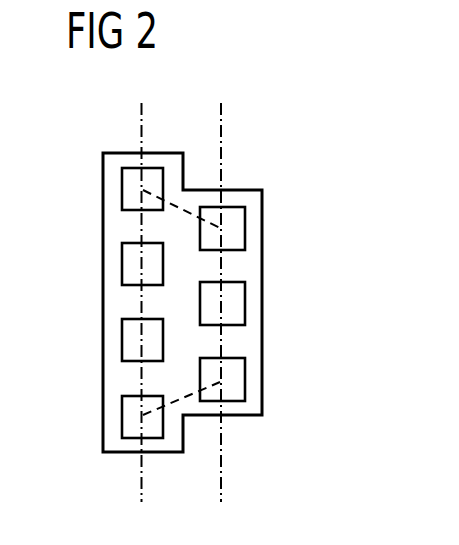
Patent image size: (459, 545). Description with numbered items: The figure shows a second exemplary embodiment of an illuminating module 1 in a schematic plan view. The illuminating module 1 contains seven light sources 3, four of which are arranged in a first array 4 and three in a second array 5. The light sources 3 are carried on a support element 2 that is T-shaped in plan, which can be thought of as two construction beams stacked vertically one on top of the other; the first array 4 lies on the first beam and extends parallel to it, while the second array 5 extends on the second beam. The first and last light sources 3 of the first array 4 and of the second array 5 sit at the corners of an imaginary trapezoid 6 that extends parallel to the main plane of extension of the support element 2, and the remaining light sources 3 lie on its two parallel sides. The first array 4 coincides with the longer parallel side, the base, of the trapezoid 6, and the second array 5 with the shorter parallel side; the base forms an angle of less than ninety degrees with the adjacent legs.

The illuminating module 1 is at (258, 160).
The support element 2 is at (248, 343).
The light sources 3 is at (122, 196).
The first array 4 is at (141, 118).
The second array 5 is at (221, 118).
The imaginary trapezoid 6 is at (140, 298).